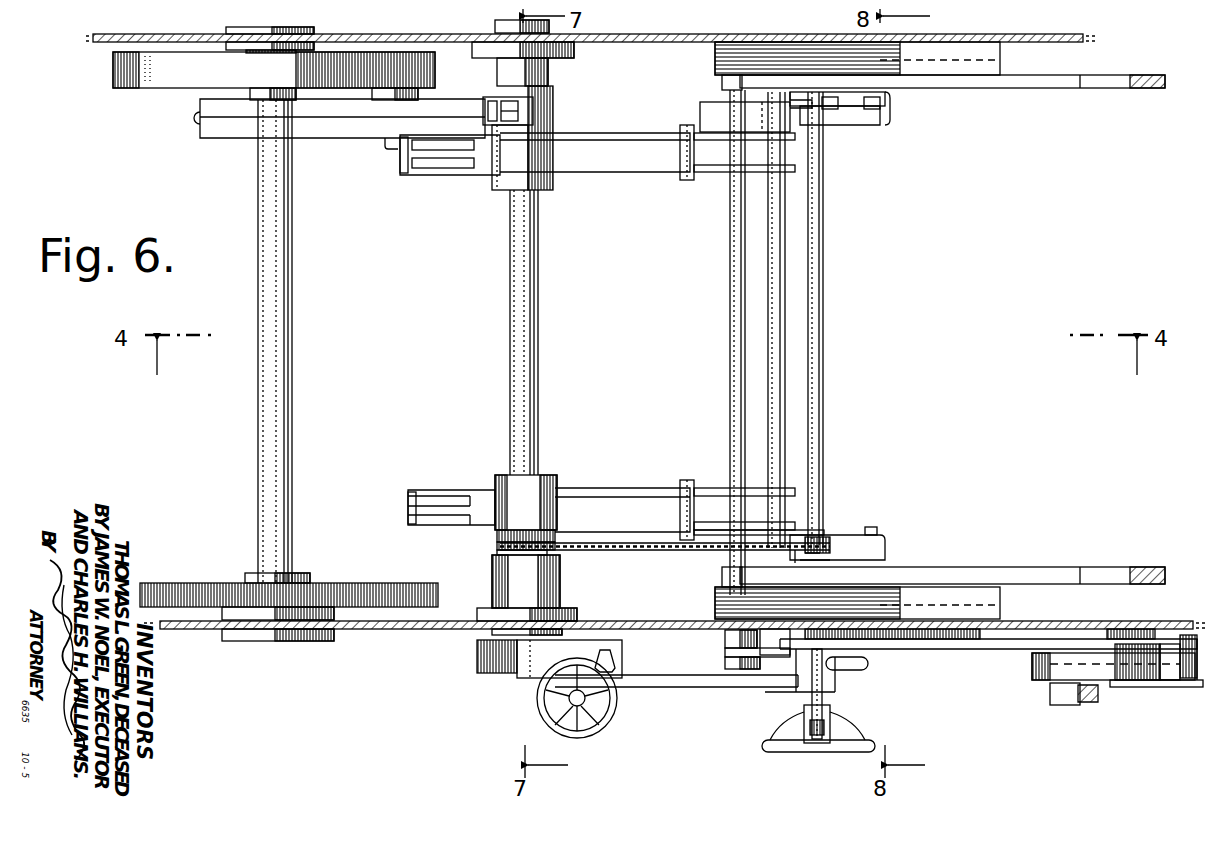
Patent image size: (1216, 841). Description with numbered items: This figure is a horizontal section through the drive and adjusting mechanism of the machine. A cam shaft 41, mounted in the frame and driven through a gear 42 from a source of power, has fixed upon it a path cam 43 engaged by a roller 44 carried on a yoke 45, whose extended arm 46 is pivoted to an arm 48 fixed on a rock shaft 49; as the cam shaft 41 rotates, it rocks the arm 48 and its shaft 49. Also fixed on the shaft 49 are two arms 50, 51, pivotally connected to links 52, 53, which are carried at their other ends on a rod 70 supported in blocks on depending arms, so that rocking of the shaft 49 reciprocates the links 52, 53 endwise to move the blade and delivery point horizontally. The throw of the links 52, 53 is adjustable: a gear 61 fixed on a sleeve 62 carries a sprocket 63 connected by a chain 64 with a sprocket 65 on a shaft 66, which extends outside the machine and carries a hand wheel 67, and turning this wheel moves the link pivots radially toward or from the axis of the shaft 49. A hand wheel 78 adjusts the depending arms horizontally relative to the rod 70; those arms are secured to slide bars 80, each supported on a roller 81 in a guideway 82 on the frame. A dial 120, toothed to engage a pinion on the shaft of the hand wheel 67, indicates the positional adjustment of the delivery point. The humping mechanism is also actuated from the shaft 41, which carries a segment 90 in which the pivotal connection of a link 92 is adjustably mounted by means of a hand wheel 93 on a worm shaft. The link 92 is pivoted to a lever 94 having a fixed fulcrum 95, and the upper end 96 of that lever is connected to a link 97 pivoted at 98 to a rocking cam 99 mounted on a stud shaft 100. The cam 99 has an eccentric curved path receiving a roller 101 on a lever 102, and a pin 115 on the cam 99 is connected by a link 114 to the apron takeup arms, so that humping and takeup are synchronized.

The cam shaft 41 is at (270, 310).
The gear 42 is at (200, 592).
The path cam 43 is at (157, 78).
The roller 44 is at (412, 90).
The yoke 45 is at (240, 128).
The extended arm 46 is at (420, 118).
The arm 48 is at (538, 110).
The rock shaft 49 is at (522, 292).
The arm 50 is at (457, 152).
The arm 51 is at (450, 508).
The link 52 is at (640, 140).
The link 53 is at (660, 495).
The gear 61 is at (520, 535).
The sleeve 62 is at (497, 545).
The sprocket 63 is at (497, 552).
The chain 64 is at (658, 552).
The sprocket 65 is at (820, 540).
The shaft 66 is at (825, 462).
The hand wheel 67 is at (815, 752).
The rod 70 is at (775, 286).
The hand wheel 78 is at (838, 665).
The slide bar 80 is at (950, 82).
The roller 81 is at (728, 79).
The guideway 82 is at (715, 48).
The segment 90 is at (480, 660).
The link 92 is at (670, 685).
The hand wheel 93 is at (535, 703).
The lever 94 is at (740, 652).
The fixed fulcrum 95 is at (725, 640).
The upper end of lever 96 is at (792, 640).
The link 97 is at (1032, 640).
The pivot 98 is at (1185, 635).
The rocking cam 99 is at (1038, 668).
The stud shaft 100 is at (1133, 629).
The roller 101 is at (1048, 683).
The lever 102 is at (1093, 702).
The link 114 is at (1185, 687).
The pin 115 is at (1120, 687).
The dial 120 is at (930, 642).